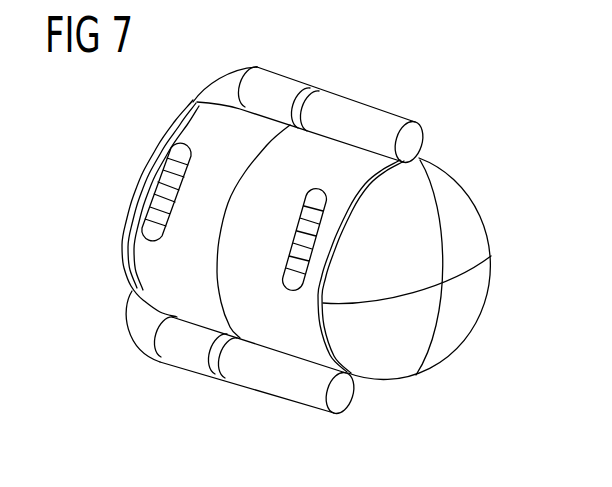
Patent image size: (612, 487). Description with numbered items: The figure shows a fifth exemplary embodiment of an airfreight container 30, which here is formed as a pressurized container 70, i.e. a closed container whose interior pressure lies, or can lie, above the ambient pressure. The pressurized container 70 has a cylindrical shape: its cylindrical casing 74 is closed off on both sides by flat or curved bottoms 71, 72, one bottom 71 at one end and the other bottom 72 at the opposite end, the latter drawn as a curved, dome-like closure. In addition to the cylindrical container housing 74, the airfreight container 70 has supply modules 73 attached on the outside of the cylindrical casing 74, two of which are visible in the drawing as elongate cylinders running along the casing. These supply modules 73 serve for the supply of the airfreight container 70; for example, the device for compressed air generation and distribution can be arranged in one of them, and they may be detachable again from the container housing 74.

The airfreight container 30 is at (106, 119).
The pressurized container 70 is at (480, 179).
The bottom 71 is at (128, 190).
The bottom 72 is at (470, 297).
The supply module 73 is at (364, 117).
The cylindrical casing 74 is at (168, 266).